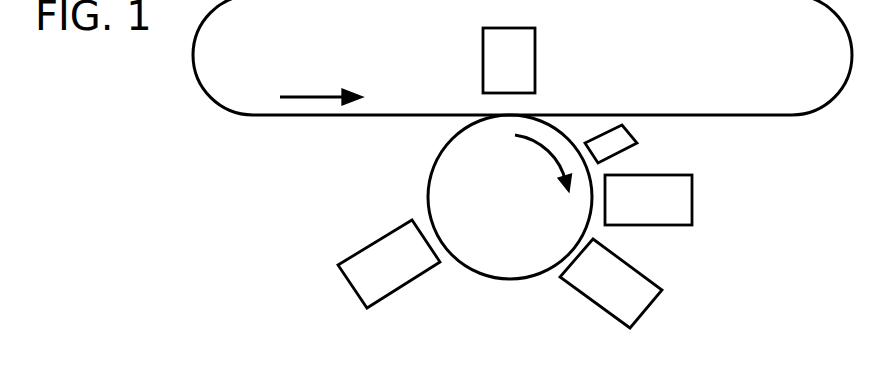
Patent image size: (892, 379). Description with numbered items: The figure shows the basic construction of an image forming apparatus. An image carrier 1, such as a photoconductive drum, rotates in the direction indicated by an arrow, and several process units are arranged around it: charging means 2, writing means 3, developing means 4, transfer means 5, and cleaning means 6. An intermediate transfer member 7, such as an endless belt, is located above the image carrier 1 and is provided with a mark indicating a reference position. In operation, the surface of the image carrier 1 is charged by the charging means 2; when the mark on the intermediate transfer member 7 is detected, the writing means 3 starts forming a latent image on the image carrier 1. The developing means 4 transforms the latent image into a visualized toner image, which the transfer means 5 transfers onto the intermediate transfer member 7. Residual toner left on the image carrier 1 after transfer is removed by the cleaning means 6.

The image carrier 1 is at (512, 280).
The charging means 2 is at (692, 198).
The writing means 3 is at (650, 305).
The developing means 4 is at (347, 286).
The transfer means 5 is at (535, 60).
The cleaning means 6 is at (637, 133).
The intermediate transfer member 7 is at (313, 95).